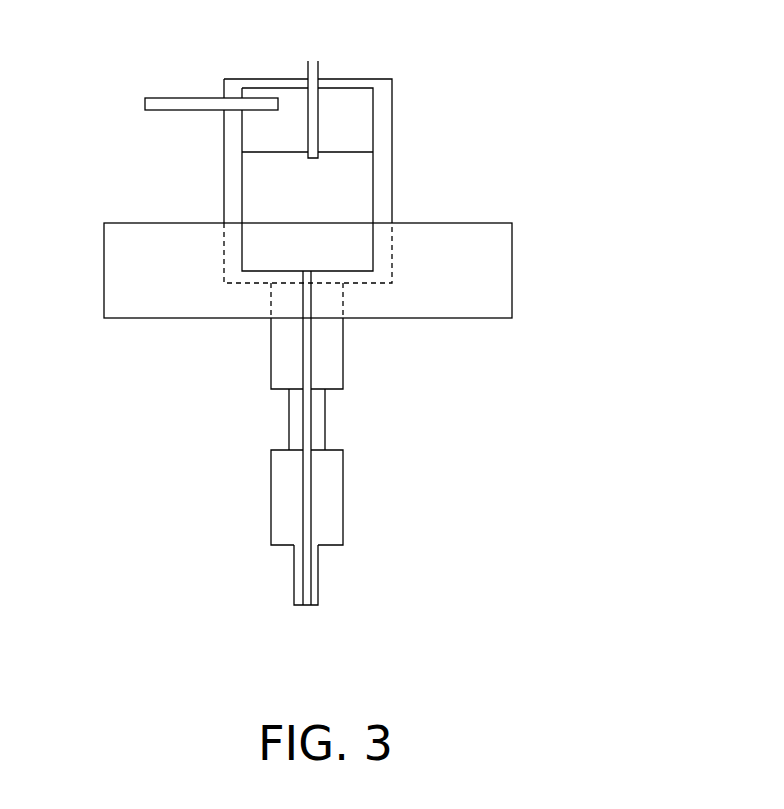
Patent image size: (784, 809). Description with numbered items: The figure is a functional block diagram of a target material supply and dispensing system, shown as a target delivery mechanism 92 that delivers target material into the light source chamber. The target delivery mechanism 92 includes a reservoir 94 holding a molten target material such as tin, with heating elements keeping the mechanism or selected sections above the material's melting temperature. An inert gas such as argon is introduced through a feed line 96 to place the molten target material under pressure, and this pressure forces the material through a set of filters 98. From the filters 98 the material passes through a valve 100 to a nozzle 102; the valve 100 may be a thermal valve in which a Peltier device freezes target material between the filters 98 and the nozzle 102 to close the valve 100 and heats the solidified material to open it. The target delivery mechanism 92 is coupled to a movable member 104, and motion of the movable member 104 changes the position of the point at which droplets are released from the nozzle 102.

The target delivery mechanism 92 is at (434, 104).
The reservoir 94 is at (378, 200).
The feed line 96 is at (177, 98).
The set of filters 98 is at (331, 378).
The valve 100 is at (318, 485).
The nozzle 102 is at (310, 592).
The movable member 104 is at (485, 272).